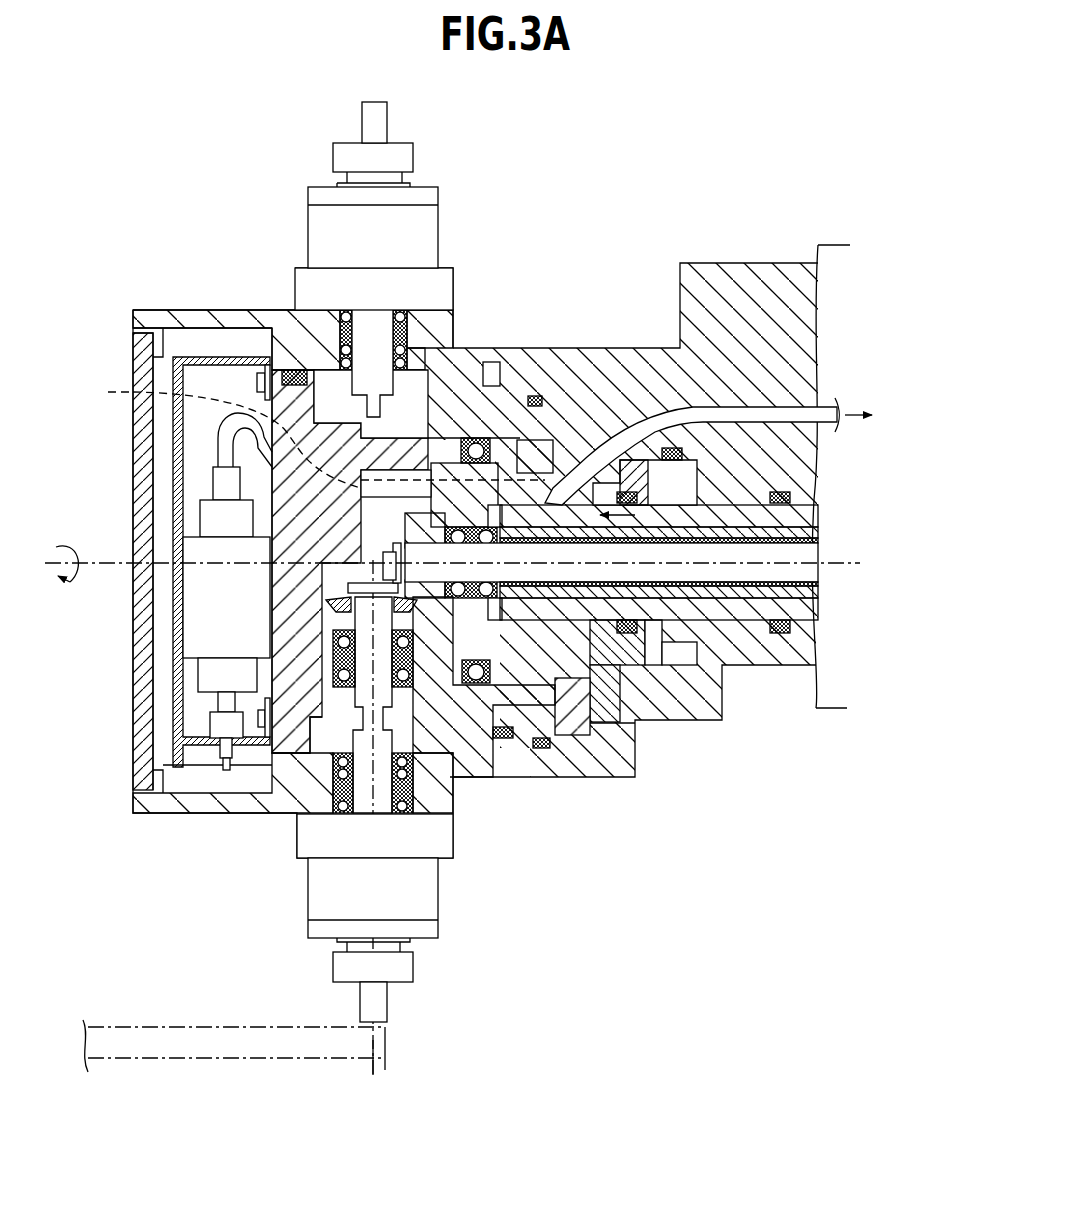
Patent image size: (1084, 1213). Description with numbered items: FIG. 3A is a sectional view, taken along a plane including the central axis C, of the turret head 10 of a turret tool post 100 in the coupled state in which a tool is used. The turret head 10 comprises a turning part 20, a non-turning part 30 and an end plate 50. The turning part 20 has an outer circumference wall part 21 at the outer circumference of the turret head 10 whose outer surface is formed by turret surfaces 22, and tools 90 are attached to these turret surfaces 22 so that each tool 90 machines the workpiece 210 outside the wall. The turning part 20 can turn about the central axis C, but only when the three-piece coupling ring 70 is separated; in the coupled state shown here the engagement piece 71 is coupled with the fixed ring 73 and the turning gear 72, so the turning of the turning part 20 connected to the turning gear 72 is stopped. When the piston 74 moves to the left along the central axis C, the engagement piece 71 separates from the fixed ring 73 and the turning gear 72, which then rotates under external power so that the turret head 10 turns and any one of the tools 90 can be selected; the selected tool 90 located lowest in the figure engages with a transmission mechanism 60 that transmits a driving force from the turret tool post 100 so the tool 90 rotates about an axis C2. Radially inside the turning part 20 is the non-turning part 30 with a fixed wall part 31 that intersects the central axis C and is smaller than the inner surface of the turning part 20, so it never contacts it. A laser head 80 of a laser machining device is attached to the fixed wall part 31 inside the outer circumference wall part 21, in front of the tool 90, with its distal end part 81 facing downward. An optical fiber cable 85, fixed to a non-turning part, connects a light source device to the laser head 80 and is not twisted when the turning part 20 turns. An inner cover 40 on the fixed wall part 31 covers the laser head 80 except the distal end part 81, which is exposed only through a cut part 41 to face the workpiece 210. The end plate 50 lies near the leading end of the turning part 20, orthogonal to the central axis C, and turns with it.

The turret head 10 is at (455, 243).
The turning part 20 is at (270, 308).
The outer circumference wall part 21 is at (293, 343).
The turret surfaces 22 is at (198, 310).
The non-turning part 30 is at (357, 580).
The fixed wall part 31 is at (305, 738).
The inner cover 40 is at (175, 458).
The cut part 41 is at (214, 772).
The end plate 50 is at (133, 762).
The transmission mechanism 60 is at (427, 612).
The three-piece coupling ring 70 is at (657, 277).
The engagement piece 71 is at (525, 455).
The turning gear 72 is at (573, 457).
The fixed ring 73 is at (565, 475).
The piston 74 is at (677, 478).
The laser head 80 is at (223, 620).
The distal end part 81 is at (230, 772).
The optical fiber cable 85 is at (846, 352).
The tool 90 is at (438, 195).
The turret tool post 100 is at (556, 193).
The workpiece 210 is at (255, 1027).
The central axis C is at (117, 557).
The axis C2 is at (373, 1078).